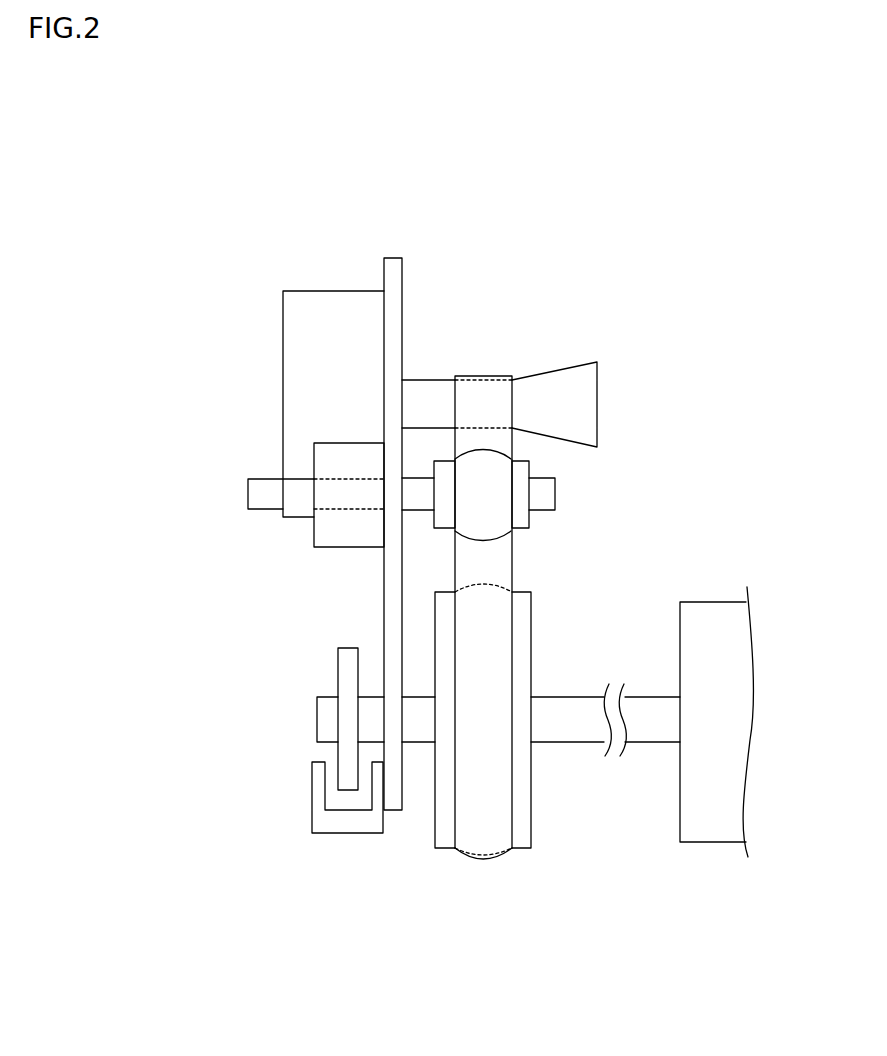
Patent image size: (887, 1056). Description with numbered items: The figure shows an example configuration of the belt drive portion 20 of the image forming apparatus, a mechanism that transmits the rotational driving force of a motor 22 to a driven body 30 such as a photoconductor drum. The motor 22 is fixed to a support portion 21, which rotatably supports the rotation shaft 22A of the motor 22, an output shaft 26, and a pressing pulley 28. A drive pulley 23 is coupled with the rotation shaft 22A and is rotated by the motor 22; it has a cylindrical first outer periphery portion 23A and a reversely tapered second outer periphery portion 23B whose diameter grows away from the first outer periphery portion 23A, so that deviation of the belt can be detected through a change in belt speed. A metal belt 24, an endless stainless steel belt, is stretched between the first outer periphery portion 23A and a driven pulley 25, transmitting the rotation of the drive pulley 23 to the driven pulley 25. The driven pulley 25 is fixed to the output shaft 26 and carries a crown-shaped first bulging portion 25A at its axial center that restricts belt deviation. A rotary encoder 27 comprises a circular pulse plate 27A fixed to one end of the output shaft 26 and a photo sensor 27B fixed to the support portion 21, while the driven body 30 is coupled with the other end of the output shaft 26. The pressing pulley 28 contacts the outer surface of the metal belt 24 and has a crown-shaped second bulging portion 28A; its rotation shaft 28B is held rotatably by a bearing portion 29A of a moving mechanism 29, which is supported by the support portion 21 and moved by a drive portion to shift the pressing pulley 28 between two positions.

The belt drive portion 20 is at (250, 327).
The support portion 21 is at (402, 282).
The motor 22 is at (302, 401).
The rotation shaft 22A is at (427, 380).
The drive pulley 23 is at (607, 308).
The first outer periphery portion 23A is at (483, 377).
The second outer periphery portion 23B is at (553, 366).
The metal belt 24 is at (503, 568).
The driven pulley 25 is at (551, 828).
The first bulging portion 25A is at (484, 859).
The output shaft 26 is at (568, 704).
The rotary encoder 27 is at (216, 672).
The pulse plate 27A is at (347, 675).
The photo sensor 27B is at (318, 773).
The pressing pulley 28 is at (541, 520).
The second bulging portion 28A is at (470, 538).
The rotation shaft 28B is at (264, 510).
The moving mechanism 29 is at (326, 563).
The bearing portion 29A is at (347, 548).
The driven body 30 is at (712, 612).